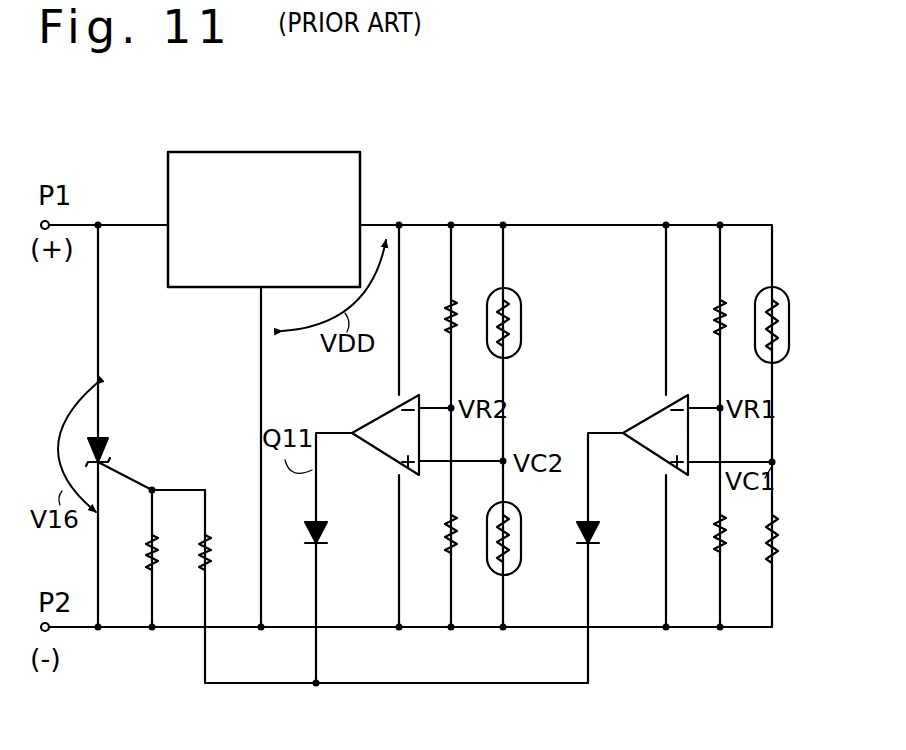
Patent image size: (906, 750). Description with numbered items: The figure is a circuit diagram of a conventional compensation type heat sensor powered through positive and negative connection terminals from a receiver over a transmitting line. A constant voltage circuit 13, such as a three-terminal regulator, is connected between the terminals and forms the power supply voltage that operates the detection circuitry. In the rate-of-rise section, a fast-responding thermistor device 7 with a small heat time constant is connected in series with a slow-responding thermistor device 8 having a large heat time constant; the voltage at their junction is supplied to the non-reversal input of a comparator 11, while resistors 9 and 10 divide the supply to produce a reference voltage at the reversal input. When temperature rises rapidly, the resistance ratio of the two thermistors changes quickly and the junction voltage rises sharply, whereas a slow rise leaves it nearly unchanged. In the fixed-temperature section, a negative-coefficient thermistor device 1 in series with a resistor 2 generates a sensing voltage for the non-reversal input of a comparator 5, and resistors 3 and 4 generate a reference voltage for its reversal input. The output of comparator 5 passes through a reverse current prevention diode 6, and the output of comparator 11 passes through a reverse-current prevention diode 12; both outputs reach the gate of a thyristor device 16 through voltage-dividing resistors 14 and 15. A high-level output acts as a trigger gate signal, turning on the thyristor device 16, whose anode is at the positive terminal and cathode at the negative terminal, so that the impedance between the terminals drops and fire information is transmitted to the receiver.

The thermistor device 1 is at (764, 362).
The resistor 2 is at (766, 530).
The resistor 3 is at (714, 326).
The resistor 4 is at (714, 530).
The comparator 5 is at (640, 424).
The reverse current prevention diode 6 is at (578, 522).
The thermistor device 7 is at (574, 326).
The thermistor device 8 is at (523, 548).
The resistor 9 is at (446, 320).
The resistor 10 is at (446, 538).
The comparator 11 is at (374, 424).
The reverse-current prevention diode 12 is at (327, 522).
The constant voltage circuit 13 is at (264, 152).
The voltage-dividing resistor 14 is at (211, 548).
The voltage-dividing resistor 15 is at (146, 548).
The thyristor device 16 is at (108, 440).